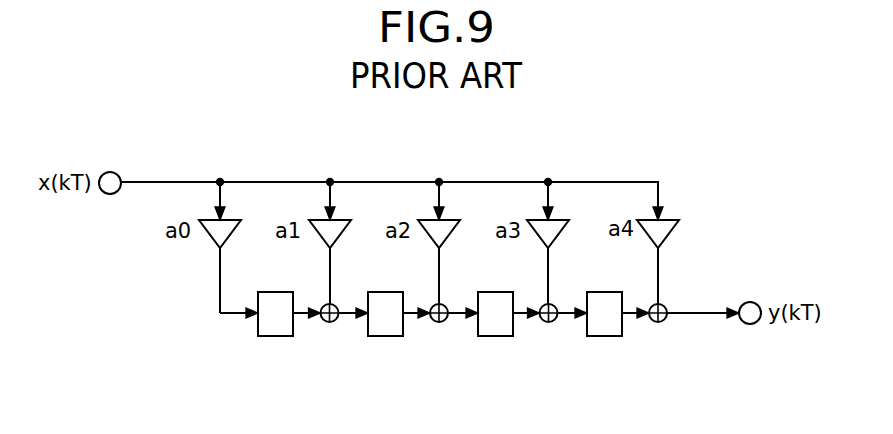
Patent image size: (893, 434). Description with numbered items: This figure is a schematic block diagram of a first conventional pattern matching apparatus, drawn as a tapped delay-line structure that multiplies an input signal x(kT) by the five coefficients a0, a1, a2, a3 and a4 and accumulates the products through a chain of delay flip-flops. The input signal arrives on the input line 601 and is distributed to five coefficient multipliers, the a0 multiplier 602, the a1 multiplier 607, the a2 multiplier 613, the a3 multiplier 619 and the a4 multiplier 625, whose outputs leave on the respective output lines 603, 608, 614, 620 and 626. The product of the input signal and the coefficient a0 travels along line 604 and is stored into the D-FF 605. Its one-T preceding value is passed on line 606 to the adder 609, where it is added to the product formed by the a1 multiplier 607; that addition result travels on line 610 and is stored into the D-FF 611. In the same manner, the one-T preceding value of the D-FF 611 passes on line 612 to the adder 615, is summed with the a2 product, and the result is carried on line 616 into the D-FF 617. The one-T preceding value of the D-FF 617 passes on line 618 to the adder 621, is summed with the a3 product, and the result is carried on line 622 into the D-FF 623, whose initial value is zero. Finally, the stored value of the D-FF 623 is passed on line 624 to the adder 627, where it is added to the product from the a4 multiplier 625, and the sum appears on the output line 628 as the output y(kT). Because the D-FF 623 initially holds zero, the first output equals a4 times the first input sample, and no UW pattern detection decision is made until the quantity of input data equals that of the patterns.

The input signal line 601 is at (150, 180).
The multiplier a0 602 is at (208, 242).
The multiplier a0 output line 603 is at (220, 299).
The signal line to first delay 604 is at (232, 320).
The D-FF 605 is at (275, 338).
The first delay output line 606 is at (303, 320).
The multiplier a1 607 is at (318, 240).
The multiplier a1 output line 608 is at (330, 283).
The first adder 609 is at (329, 323).
The first adder output line 610 is at (351, 320).
The D-FF 611 is at (385, 338).
The second delay output line 612 is at (416, 320).
The multiplier a2 613 is at (428, 240).
The multiplier a2 output line 614 is at (439, 283).
The second adder 615 is at (438, 323).
The second adder output line 616 is at (458, 320).
The D-FF 617 is at (496, 336).
The third delay output line 618 is at (525, 320).
The multiplier a3 619 is at (537, 240).
The multiplier a3 output line 620 is at (548, 283).
The third adder 621 is at (548, 323).
The third adder output line 622 is at (571, 320).
The D-FF 623 is at (605, 336).
The fourth delay output line 624 is at (635, 320).
The multiplier a4 625 is at (647, 239).
The multiplier a4 output line 626 is at (658, 282).
The fourth adder 627 is at (659, 323).
The output signal line 628 is at (700, 320).